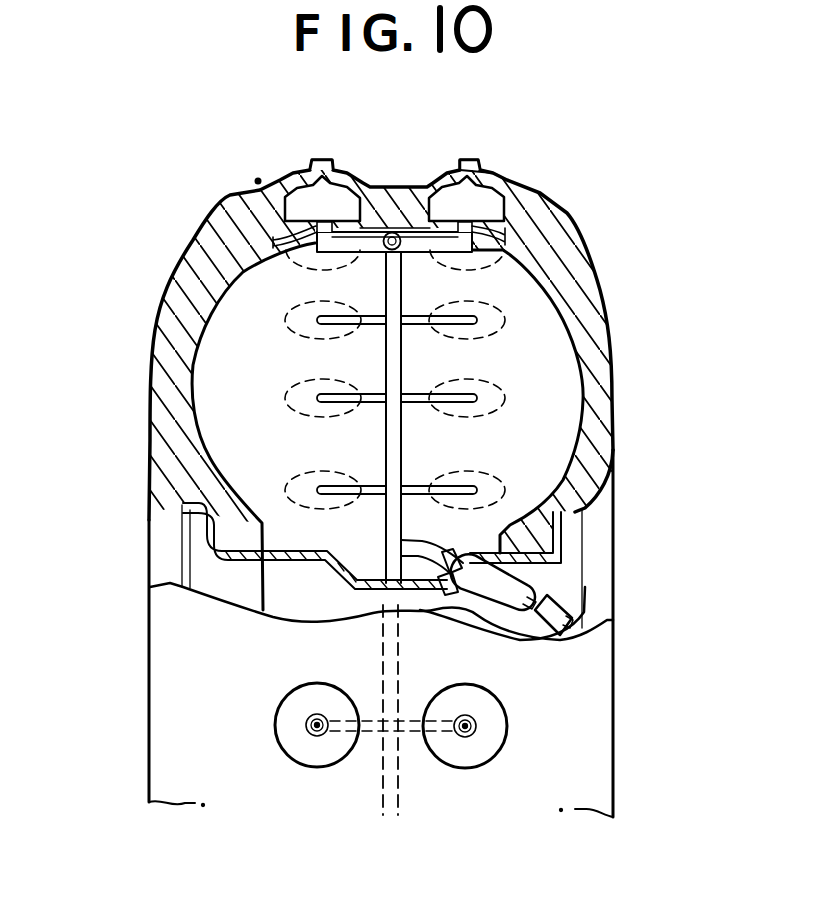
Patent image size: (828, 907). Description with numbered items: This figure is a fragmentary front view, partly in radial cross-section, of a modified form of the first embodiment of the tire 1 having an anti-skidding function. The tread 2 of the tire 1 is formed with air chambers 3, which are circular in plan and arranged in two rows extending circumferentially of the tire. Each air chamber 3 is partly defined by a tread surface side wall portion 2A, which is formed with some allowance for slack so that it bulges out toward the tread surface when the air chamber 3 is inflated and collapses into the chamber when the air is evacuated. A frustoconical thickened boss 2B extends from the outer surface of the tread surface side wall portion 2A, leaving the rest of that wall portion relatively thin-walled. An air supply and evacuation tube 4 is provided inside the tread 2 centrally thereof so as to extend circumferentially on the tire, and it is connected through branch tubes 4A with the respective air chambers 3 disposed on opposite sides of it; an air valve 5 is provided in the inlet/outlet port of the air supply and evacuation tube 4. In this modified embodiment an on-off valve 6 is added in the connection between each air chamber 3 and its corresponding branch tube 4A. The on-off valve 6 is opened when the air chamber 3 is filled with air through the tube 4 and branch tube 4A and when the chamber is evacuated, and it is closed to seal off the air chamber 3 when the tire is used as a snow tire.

The tire 1 is at (614, 341).
The tread 2 is at (397, 203).
The tread surface side wall portion 2A is at (348, 178).
The frustoconical thickened boss 2B is at (322, 160).
The air chamber 3 is at (306, 198).
The air supply and evacuation tube 4 is at (390, 360).
The branch tube 4A is at (333, 492).
The air valve 5 is at (503, 593).
The on-off valve 6 is at (313, 217).